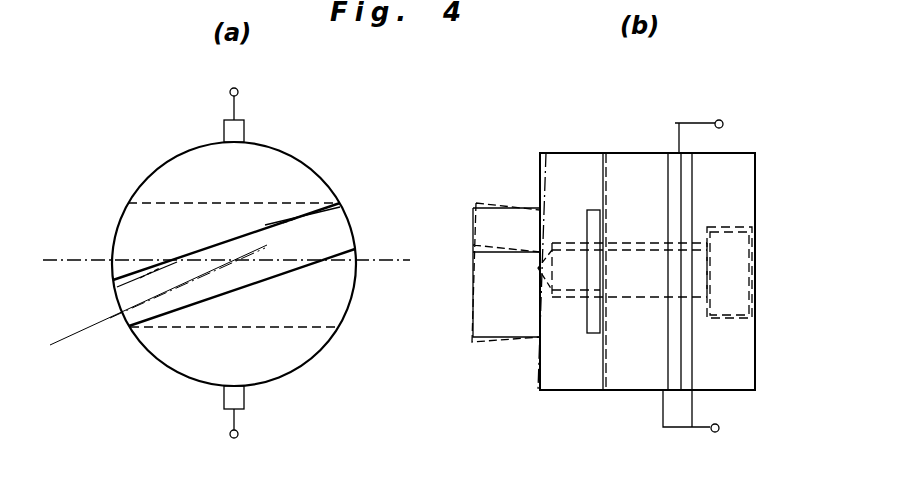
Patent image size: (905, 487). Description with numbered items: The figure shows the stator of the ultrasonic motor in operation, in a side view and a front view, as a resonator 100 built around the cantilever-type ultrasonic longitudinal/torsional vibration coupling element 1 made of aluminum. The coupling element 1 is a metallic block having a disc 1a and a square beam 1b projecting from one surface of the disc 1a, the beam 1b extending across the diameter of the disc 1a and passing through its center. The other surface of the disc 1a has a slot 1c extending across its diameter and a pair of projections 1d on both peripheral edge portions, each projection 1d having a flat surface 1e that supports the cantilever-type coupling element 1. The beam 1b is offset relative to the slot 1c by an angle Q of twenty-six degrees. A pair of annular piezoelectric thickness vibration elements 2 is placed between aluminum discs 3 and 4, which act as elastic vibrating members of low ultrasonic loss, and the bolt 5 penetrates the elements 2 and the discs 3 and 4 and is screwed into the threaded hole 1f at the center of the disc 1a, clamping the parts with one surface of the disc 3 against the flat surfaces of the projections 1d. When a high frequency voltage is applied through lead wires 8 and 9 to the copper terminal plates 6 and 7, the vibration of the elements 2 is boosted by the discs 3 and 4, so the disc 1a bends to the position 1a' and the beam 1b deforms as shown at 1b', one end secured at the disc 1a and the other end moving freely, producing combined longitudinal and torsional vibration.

The ultrasonic longitudinal/torsional vibration coupling element 1 is at (568, 83).
The disc 1a is at (339, 232).
The bent position of the disc 1a' is at (500, 411).
The beam 1b is at (295, 212).
The deformed position of the beam 1b' is at (281, 267).
The slot 1c is at (318, 333).
The projections 1d is at (592, 180).
The flat surface 1e is at (166, 180).
The threaded hole 1f is at (573, 297).
The piezoelectric thickness vibration elements 2 is at (673, 358).
The aluminum disc 3 is at (640, 165).
The aluminum disc 4 is at (745, 153).
The bolt 5 is at (750, 268).
The terminal plate 6 is at (224, 131).
The terminal plate 7 is at (245, 400).
The lead wire 8 is at (712, 120).
The lead wire 9 is at (712, 430).
The resonator 100 is at (757, 203).
The offset angle Q is at (48, 262).